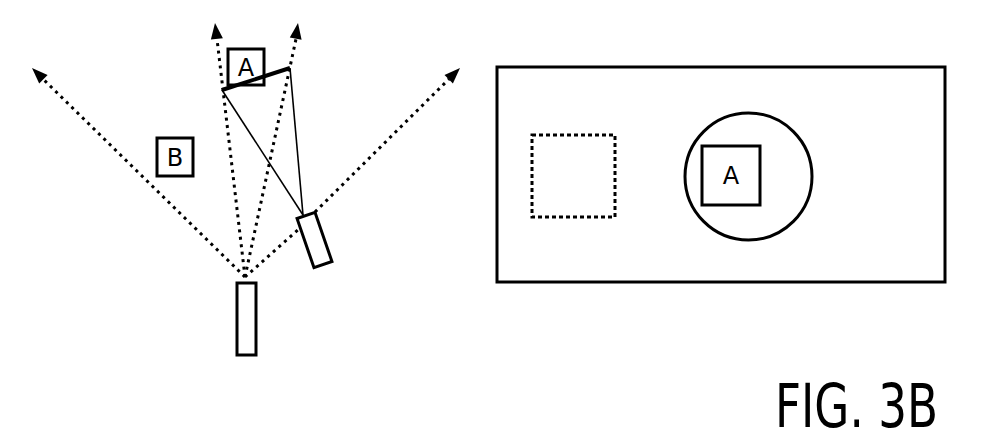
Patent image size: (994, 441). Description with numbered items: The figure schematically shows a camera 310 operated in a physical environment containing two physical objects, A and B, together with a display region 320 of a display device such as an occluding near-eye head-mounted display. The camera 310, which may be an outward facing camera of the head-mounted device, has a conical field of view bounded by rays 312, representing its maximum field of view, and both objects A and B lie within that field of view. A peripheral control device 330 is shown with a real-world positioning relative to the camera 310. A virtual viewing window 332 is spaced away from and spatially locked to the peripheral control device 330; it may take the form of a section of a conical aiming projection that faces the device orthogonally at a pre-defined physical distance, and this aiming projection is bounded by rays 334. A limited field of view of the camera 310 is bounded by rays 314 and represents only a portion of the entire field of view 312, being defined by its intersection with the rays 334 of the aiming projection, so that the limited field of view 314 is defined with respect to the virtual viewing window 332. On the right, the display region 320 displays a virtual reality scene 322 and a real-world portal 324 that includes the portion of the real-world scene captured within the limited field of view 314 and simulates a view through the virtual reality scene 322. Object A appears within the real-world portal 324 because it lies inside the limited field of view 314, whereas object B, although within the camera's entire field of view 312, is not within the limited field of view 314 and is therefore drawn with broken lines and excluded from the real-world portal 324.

The camera 310 is at (245, 328).
The rays bounding the field of view 312 is at (110, 147).
The rays bounding the limited field of view 314 is at (227, 132).
The display region 320 is at (910, 281).
The virtual reality scene 322 is at (883, 123).
The real-world portal 324 is at (782, 228).
The peripheral control device 330 is at (323, 252).
The virtual viewing window 332 is at (279, 72).
The rays bounding the aiming projection 334 is at (278, 177).